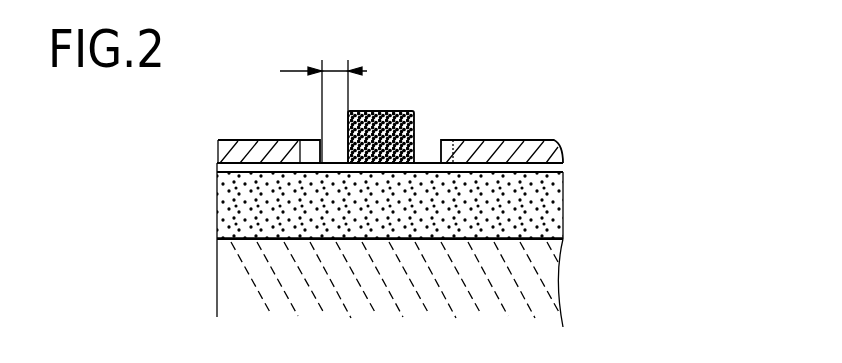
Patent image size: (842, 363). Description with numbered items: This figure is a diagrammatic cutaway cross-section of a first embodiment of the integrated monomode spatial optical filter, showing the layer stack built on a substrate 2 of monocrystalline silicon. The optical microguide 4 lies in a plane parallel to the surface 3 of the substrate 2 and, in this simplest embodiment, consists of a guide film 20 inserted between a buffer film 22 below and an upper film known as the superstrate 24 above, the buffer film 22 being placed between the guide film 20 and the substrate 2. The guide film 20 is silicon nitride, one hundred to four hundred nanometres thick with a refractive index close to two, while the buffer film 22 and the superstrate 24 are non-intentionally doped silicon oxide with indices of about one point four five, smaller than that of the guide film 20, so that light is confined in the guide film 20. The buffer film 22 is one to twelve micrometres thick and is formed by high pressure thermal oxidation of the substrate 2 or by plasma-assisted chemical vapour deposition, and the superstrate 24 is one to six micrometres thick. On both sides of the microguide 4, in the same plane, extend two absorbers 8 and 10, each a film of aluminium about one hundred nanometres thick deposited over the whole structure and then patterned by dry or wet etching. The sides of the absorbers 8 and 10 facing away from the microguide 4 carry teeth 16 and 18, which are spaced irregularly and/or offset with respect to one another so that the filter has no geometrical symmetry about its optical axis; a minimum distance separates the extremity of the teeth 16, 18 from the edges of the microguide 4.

The substrate 2 is at (225, 293).
The surface of the substrate 3 is at (217, 238).
The optical microguide 4 is at (422, 151).
The absorber 8 is at (254, 135).
The absorber 10 is at (525, 130).
The teeth 16 is at (310, 161).
The teeth 18 is at (452, 142).
The guide film 20 is at (215, 167).
The buffer film 22 is at (543, 210).
The superstrate 24 is at (382, 111).